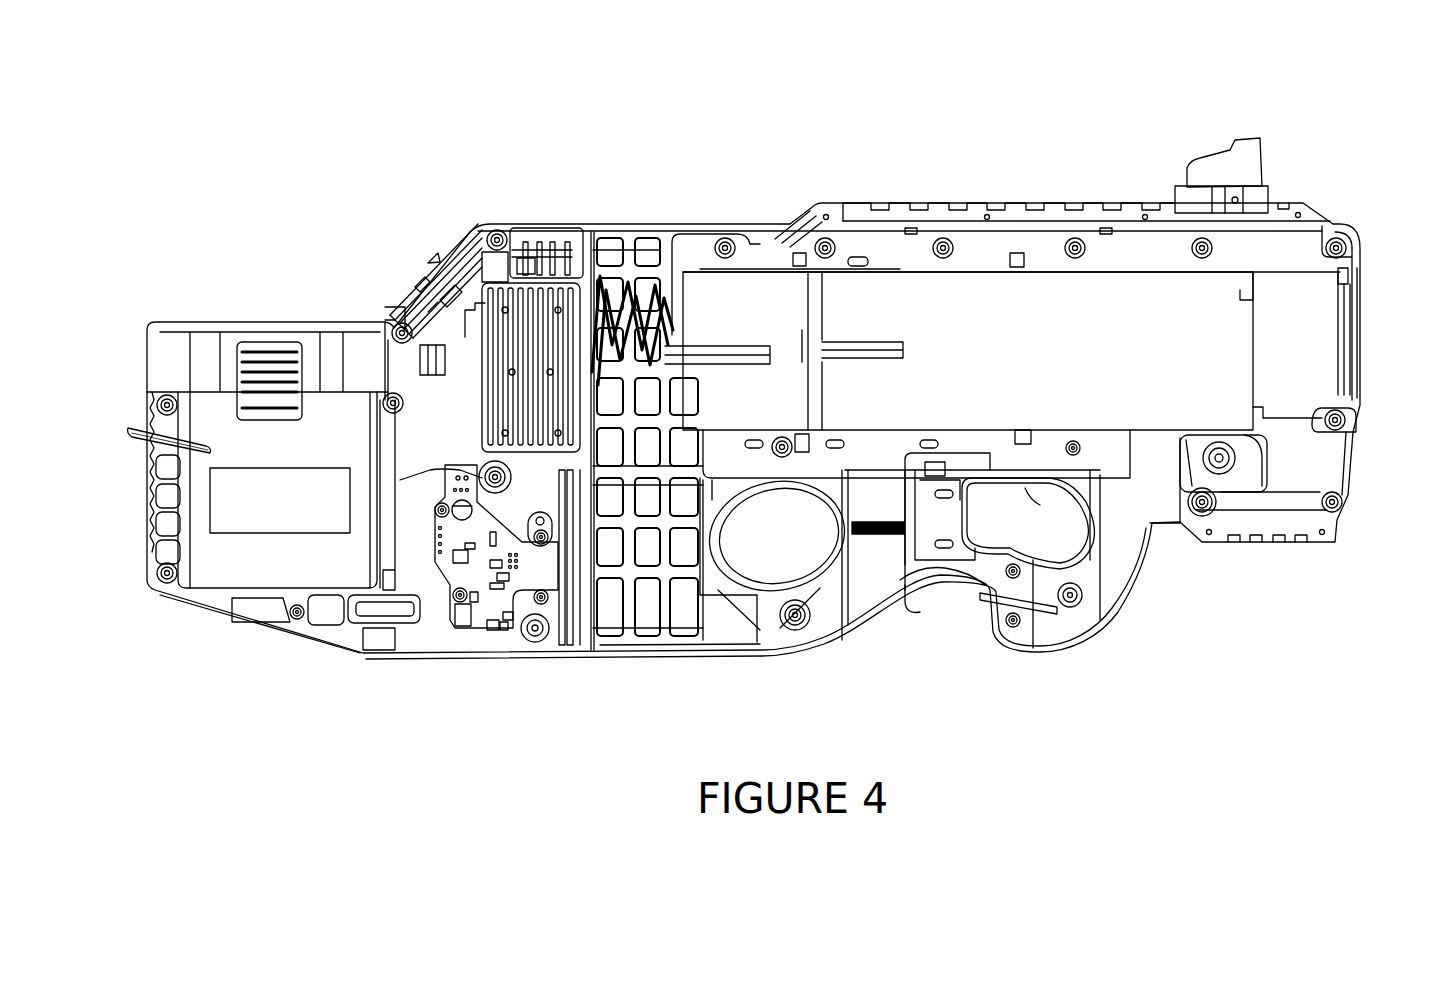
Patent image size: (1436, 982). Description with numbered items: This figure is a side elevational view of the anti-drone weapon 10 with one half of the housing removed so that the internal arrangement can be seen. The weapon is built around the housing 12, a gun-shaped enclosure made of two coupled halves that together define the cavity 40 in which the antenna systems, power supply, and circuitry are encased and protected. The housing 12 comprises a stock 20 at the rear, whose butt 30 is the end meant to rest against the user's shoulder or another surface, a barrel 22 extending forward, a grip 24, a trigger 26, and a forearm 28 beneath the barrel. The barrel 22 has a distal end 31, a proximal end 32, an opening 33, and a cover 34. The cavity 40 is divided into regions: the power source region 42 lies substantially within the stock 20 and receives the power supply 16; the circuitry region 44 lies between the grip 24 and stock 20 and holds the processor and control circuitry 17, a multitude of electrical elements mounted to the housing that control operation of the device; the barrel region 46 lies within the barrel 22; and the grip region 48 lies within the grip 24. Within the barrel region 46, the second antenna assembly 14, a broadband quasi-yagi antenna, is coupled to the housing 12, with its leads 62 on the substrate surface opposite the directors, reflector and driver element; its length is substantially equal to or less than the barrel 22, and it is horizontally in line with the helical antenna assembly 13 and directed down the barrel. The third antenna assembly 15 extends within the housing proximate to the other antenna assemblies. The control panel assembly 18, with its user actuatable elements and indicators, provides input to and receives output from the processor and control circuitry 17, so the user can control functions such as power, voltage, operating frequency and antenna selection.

The anti-drone weapon 10 is at (640, 98).
The housing 12 is at (538, 220).
The helical antenna assembly 13 is at (656, 262).
The second antenna assembly 14 is at (1046, 236).
The third antenna assembly 15 is at (866, 592).
The power supply 16 is at (184, 306).
The processor and control circuitry 17 is at (492, 640).
The control panel assembly 18 is at (420, 245).
The stock 20 is at (208, 620).
The barrel 22 is at (923, 190).
The grip 24 is at (705, 675).
The trigger 26 is at (982, 505).
The forearm 28 is at (1260, 582).
The butt 30 is at (138, 540).
The distal end 31 is at (1380, 242).
The proximal end 32 is at (594, 220).
The opening 33 is at (1358, 327).
The cover 34 is at (1358, 276).
The cavity 40 is at (775, 640).
The power source region 42 is at (198, 491).
The circuitry region 44 is at (471, 640).
The barrel region 46 is at (852, 252).
The grip region 48 is at (945, 614).
The leads 62 is at (855, 335).